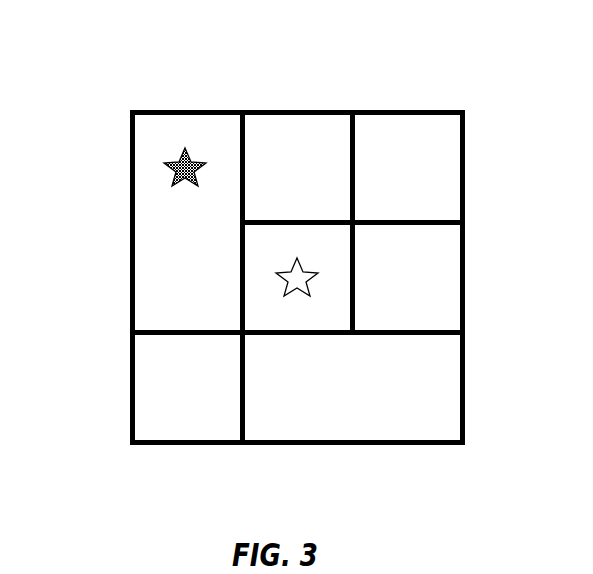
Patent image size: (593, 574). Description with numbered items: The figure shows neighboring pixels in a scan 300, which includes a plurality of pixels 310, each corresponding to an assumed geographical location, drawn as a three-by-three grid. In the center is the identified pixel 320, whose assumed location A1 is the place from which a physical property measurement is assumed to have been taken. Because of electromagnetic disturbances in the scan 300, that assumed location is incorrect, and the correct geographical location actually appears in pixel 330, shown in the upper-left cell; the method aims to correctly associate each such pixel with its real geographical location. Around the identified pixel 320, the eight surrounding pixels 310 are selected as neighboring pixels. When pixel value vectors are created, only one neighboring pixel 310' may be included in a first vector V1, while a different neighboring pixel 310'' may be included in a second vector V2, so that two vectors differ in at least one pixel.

The scan 300 is at (100, 93).
The pixels 310 is at (408, 143).
The neighboring pixel 310' is at (298, 135).
The neighboring pixel 310'' is at (453, 278).
The identified pixel 320 is at (316, 275).
The pixel 330 is at (168, 164).